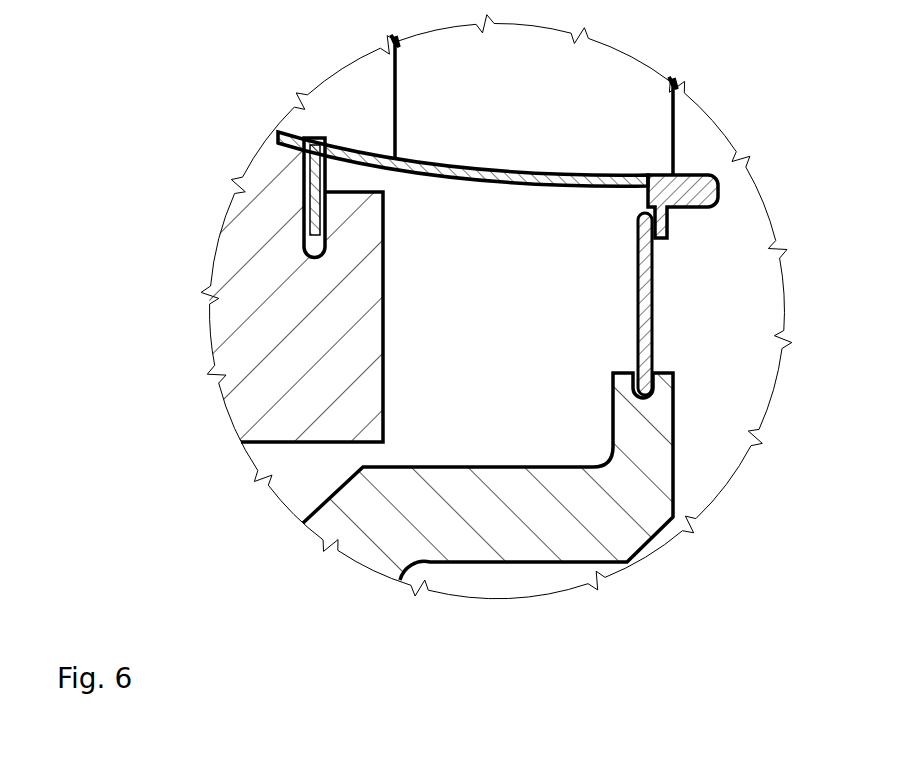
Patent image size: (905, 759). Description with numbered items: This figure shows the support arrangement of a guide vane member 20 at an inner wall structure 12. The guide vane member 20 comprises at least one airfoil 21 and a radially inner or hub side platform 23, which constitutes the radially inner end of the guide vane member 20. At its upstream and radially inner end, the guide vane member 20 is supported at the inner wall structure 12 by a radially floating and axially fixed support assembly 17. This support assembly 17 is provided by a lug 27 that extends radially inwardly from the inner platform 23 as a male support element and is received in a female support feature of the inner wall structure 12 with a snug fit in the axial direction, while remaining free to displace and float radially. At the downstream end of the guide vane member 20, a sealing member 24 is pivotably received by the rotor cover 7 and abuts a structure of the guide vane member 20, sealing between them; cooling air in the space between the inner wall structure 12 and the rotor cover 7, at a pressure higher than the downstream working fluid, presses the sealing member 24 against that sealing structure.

The rotor cover 7 is at (370, 535).
The inner wall structure 12 is at (268, 403).
The radially floating and axially fixed support assembly 17 is at (274, 166).
The guide vane member 20 is at (702, 129).
The airfoil 21 is at (600, 110).
The radially inner platform 23 is at (508, 173).
The sealing member 24 is at (645, 332).
The lug 27 is at (310, 207).